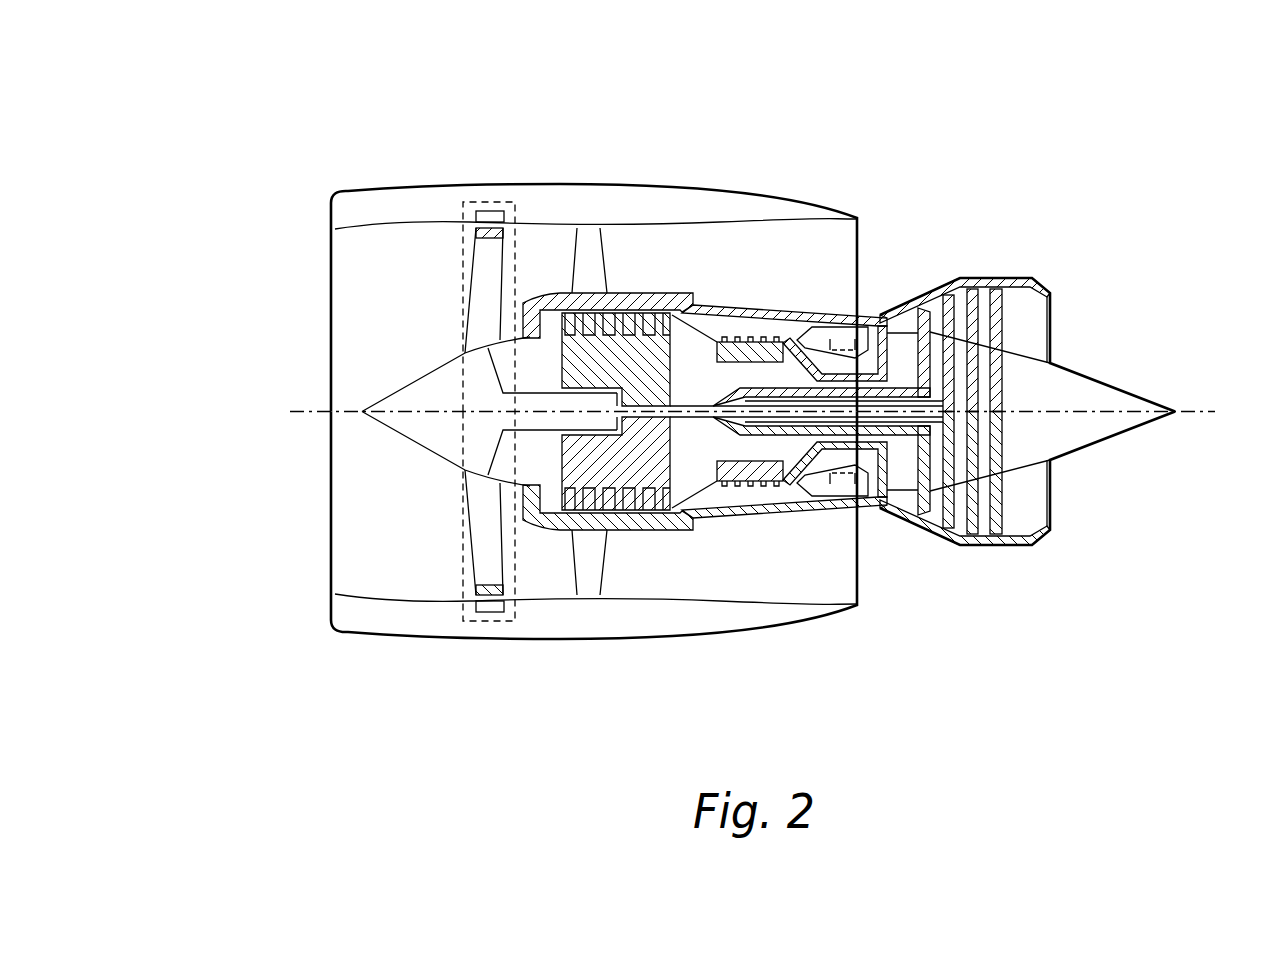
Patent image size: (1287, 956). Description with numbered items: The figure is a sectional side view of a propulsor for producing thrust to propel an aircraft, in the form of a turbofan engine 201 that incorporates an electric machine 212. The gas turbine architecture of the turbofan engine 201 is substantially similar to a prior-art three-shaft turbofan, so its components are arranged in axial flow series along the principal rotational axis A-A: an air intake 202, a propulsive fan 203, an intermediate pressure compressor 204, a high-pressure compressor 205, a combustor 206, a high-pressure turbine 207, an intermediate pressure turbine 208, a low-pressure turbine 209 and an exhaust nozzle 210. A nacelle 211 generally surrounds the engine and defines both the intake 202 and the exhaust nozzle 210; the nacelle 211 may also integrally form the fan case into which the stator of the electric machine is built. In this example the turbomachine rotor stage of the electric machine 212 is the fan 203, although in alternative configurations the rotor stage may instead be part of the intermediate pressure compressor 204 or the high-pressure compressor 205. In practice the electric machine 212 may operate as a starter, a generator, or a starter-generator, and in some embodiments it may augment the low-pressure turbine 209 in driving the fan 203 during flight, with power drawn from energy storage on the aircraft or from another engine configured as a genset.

The turbofan engine 201 is at (262, 73).
The air intake 202 is at (425, 525).
The fan 203 is at (478, 304).
The intermediate pressure compressor 204 is at (698, 311).
The high-pressure compressor 205 is at (750, 334).
The combustor 206 is at (852, 485).
The high-pressure turbine 207 is at (882, 317).
The intermediate pressure turbine 208 is at (927, 508).
The low-pressure turbine 209 is at (1002, 527).
The exhaust nozzle 210 is at (1042, 334).
The nacelle 211 is at (358, 608).
The electric machine 212 is at (517, 613).